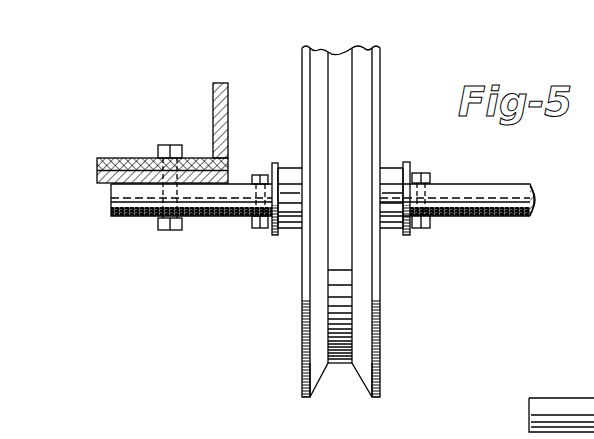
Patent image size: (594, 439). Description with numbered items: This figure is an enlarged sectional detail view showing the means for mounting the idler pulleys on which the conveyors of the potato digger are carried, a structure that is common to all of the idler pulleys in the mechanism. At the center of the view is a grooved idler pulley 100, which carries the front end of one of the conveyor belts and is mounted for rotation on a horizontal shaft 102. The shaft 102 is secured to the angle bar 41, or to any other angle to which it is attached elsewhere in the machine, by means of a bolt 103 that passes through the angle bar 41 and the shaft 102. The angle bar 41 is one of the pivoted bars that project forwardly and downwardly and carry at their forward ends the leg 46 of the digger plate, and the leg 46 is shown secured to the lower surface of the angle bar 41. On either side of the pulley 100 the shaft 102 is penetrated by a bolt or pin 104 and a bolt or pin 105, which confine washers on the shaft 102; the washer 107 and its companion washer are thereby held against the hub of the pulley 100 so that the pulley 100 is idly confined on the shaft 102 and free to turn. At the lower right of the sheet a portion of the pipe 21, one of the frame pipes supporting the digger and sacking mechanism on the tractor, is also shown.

The pipe 21 is at (558, 398).
The angle bar 41 is at (213, 103).
The leg 46 is at (97, 176).
The pulley 100 is at (380, 300).
The shaft 102 is at (480, 216).
The bolt 103 is at (175, 230).
The bolt or pin 104 is at (258, 228).
The bolt or pin 105 is at (274, 163).
The washer 107 is at (405, 162).